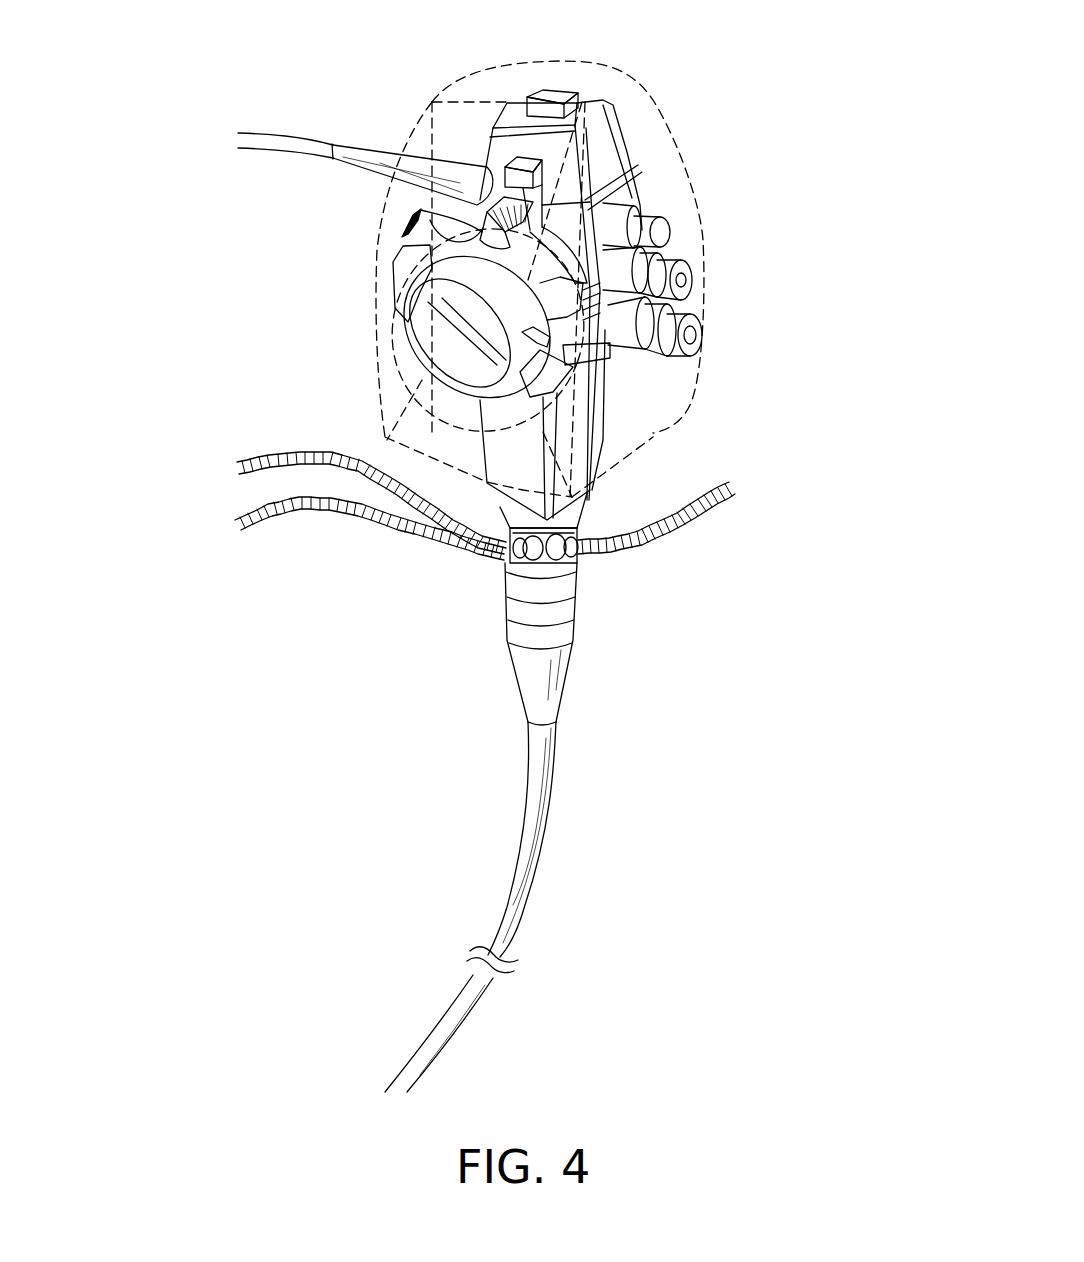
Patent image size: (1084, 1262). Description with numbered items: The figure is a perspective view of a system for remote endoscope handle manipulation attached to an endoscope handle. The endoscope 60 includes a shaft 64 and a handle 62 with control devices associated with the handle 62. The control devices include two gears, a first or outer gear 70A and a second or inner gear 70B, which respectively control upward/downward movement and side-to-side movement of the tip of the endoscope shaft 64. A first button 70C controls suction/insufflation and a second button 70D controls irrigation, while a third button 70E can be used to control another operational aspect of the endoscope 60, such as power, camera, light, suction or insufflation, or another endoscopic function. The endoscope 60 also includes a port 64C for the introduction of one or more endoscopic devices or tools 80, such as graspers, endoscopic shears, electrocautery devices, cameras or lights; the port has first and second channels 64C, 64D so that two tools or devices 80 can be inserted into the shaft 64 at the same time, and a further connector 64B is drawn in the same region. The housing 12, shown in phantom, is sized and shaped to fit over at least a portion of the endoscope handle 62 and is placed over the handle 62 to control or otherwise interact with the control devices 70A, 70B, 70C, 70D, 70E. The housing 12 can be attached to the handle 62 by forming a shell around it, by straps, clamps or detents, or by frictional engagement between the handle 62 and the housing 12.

The housing 12 is at (670, 118).
The endoscope 60 is at (570, 690).
The handle 62 is at (532, 96).
The shaft 64 is at (463, 1023).
The cable connector 64B is at (578, 520).
The port 64C is at (515, 565).
The second channel 64D is at (576, 562).
The first gear 70A is at (403, 236).
The second gear 70B is at (398, 300).
The first button 70C is at (683, 280).
The second button 70D is at (693, 337).
The third button 70E is at (661, 232).
The endoscopic devices or tools 80 is at (670, 533).